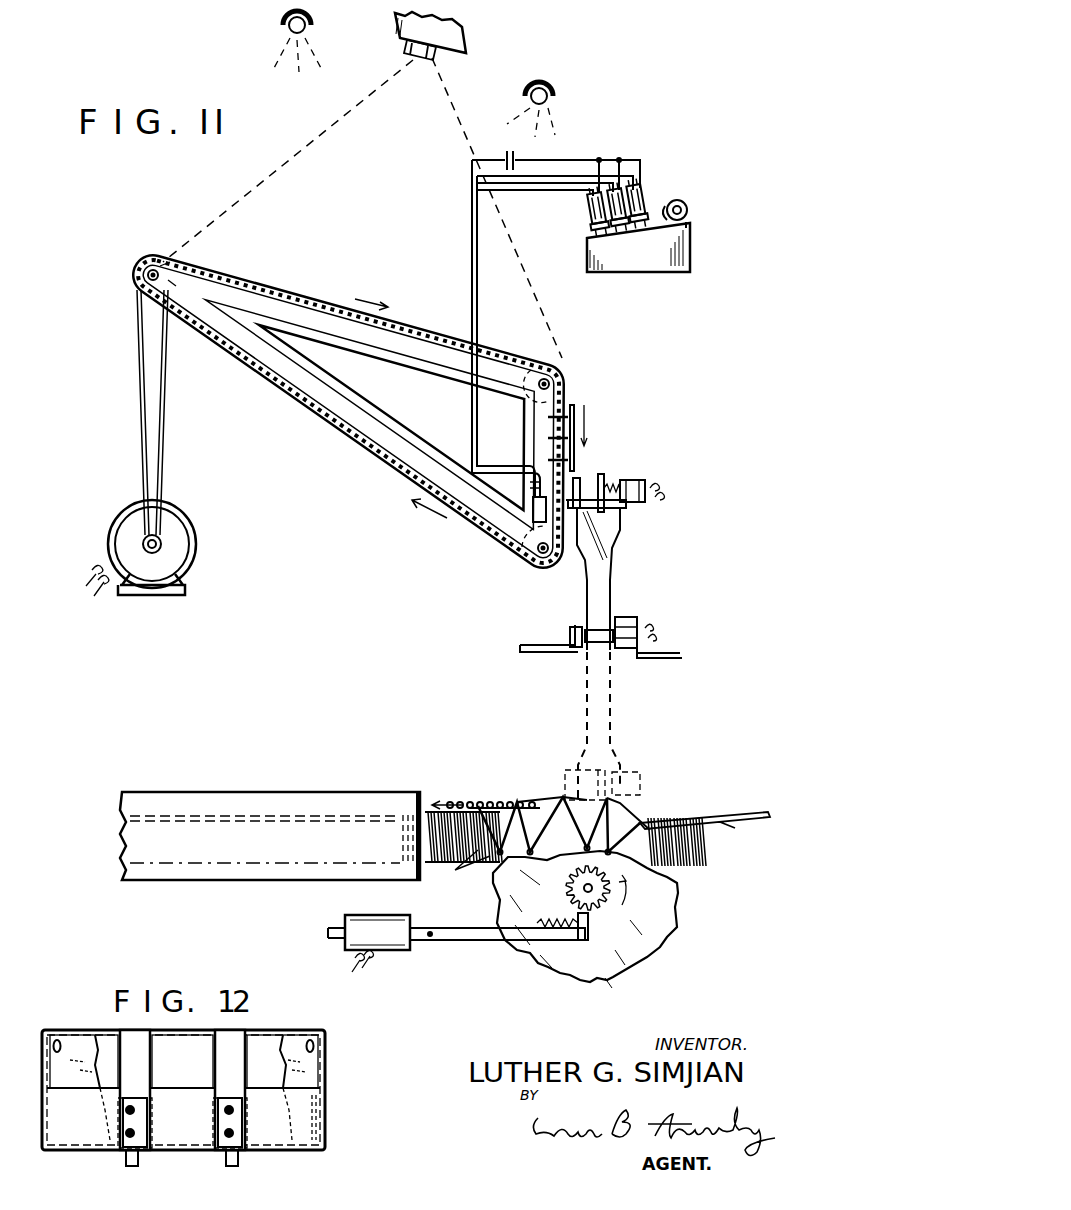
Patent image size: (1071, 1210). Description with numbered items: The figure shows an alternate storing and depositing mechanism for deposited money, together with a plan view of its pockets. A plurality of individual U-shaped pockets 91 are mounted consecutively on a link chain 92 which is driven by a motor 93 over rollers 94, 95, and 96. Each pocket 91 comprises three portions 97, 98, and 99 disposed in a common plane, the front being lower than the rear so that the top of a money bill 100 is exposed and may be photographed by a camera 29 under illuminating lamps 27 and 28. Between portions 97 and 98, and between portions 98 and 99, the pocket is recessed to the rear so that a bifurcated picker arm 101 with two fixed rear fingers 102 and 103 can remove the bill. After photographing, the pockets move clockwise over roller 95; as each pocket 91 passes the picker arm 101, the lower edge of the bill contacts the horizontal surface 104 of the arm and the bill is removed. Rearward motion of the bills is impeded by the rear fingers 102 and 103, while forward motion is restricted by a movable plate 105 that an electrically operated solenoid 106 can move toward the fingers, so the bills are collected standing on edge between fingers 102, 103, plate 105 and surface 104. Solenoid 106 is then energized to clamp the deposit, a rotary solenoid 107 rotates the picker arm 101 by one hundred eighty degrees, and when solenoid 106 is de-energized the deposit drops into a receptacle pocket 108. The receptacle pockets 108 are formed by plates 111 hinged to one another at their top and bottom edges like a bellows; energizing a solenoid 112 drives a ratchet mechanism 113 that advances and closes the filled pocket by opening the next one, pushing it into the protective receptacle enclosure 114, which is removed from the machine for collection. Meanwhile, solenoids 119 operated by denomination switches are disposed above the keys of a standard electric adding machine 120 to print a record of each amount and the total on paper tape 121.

In FIG. 11, the illuminating lamp 27 is at (548, 88).
In FIG. 11, the illuminating lamp 28 is at (308, 22).
In FIG. 11, the camera 29 is at (466, 40).
In FIG. 11, the U-shaped pocket 91 is at (603, 440).
In FIG. 12, the U-shaped pocket 91 is at (305, 1115).
In FIG. 11, the link chain 92 is at (283, 396).
In FIG. 11, the motor 93 is at (172, 548).
In FIG. 11, the roller 94 is at (131, 281).
In FIG. 11, the roller 95 is at (560, 372).
In FIG. 11, the roller 96 is at (526, 562).
In FIG. 12, the pocket portion 97 is at (96, 1033).
In FIG. 12, the pocket portion 98 is at (168, 1030).
In FIG. 12, the pocket portion 99 is at (278, 1032).
In FIG. 12, the money bill 100 is at (300, 1065).
In FIG. 11, the bifurcated picker arm 101 is at (603, 562).
In FIG. 12, the rear finger 102 is at (238, 1160).
In FIG. 11, the rear finger 103 is at (581, 488).
In FIG. 12, the rear finger 103 is at (138, 1160).
In FIG. 11, the horizontal surface 104 is at (612, 507).
In FIG. 11, the movable plate 105 is at (606, 480).
In FIG. 11, the solenoid 106 is at (648, 497).
In FIG. 11, the rotary solenoid 107 is at (635, 615).
In FIG. 11, the receptacle pocket 108 is at (608, 831).
In FIG. 11, the plate 111 is at (463, 847).
In FIG. 11, the solenoid 112 is at (386, 955).
In FIG. 11, the ratchet mechanism 113 is at (592, 920).
In FIG. 11, the receptacle enclosure 114 is at (256, 802).
In FIG. 11, the solenoid 119 is at (638, 197).
In FIG. 11, the electric adding machine 120 is at (637, 263).
In FIG. 11, the paper tape 121 is at (684, 204).